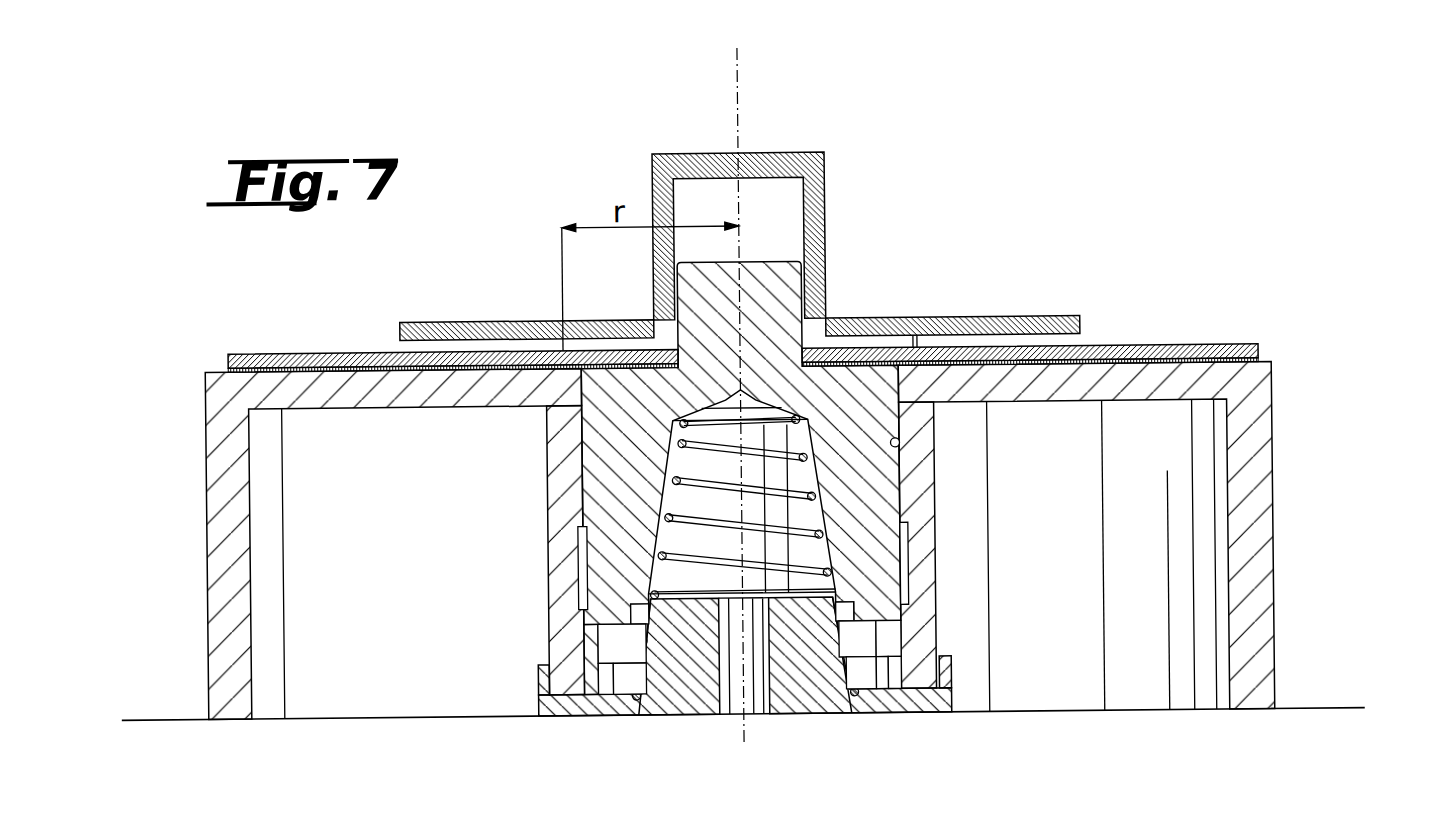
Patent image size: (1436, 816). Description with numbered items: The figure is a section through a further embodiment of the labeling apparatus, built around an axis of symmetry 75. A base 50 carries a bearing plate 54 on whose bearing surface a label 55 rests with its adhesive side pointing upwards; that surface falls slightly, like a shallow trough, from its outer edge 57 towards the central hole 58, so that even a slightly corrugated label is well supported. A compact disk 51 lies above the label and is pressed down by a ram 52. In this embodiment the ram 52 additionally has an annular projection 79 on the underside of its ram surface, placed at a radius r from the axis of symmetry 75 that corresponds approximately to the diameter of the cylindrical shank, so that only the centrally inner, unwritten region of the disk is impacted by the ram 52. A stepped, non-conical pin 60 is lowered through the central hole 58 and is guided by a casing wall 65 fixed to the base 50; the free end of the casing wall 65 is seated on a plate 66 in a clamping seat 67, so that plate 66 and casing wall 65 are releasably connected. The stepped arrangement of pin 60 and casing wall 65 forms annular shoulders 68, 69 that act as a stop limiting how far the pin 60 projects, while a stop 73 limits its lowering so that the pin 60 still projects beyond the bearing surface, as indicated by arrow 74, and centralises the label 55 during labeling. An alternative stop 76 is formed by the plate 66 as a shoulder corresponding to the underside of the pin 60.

The base 50 is at (1278, 410).
The compact disk 51 is at (1240, 350).
The ram 52 is at (822, 204).
The bearing plate 54 is at (1112, 386).
The label 55 is at (1115, 364).
The outer edge 57 is at (207, 365).
The central hole 58 is at (900, 455).
The pin 60 is at (864, 532).
The casing wall 65 is at (582, 460).
The plate 66 is at (682, 688).
The clamping seat 67 is at (952, 650).
The annular shoulder 68 is at (579, 594).
The annular shoulder 69 is at (574, 536).
The stop 73 is at (916, 613).
The arrow 74 is at (905, 366).
The axis of symmetry 75 is at (746, 84).
The alternative stop 76 is at (576, 633).
The annular projection 79 is at (895, 349).